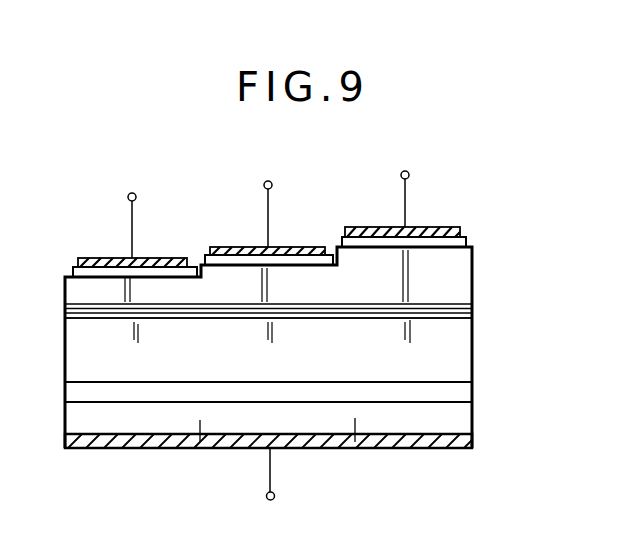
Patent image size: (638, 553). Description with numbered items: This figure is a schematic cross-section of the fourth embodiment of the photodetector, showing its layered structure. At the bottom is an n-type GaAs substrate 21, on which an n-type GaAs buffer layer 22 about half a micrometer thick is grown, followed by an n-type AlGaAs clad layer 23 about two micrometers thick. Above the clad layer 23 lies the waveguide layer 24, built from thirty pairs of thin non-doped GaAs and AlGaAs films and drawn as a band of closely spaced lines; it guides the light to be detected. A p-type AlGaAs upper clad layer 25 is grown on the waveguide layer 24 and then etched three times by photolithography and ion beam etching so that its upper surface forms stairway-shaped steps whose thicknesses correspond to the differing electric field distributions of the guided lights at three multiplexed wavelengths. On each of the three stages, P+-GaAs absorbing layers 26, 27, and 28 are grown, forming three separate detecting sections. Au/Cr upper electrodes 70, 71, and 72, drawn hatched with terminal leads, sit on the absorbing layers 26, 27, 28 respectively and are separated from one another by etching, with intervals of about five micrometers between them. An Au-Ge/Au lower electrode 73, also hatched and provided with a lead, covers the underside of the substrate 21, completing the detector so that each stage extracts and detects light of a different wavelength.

The n-type GaAs substrate 21 is at (475, 421).
The n-type GaAs buffer layer 22 is at (475, 392).
The n-type AlGaAs clad layer 23 is at (475, 355).
The waveguide layer 24 is at (475, 314).
The upper clad layer 25 is at (474, 265).
The absorbing layer 26 is at (73, 266).
The absorbing layer 27 is at (203, 263).
The absorbing layer 28 is at (338, 247).
The upper electrode 70 is at (102, 258).
The upper electrode 71 is at (230, 247).
The upper electrode 72 is at (373, 227).
The lower electrode 73 is at (475, 446).